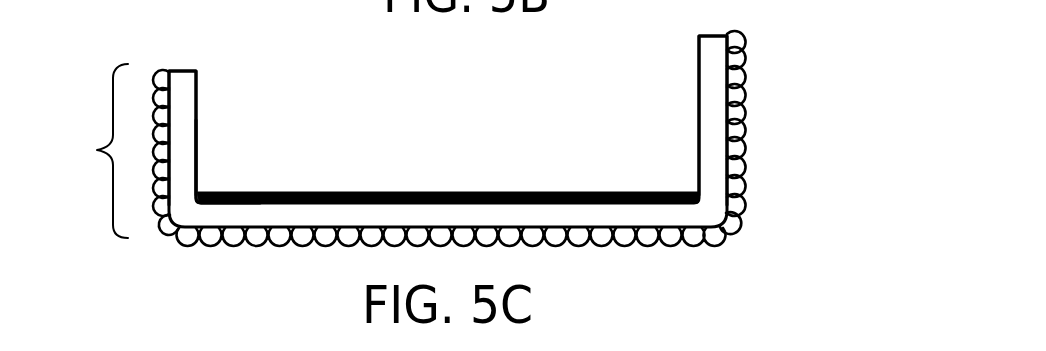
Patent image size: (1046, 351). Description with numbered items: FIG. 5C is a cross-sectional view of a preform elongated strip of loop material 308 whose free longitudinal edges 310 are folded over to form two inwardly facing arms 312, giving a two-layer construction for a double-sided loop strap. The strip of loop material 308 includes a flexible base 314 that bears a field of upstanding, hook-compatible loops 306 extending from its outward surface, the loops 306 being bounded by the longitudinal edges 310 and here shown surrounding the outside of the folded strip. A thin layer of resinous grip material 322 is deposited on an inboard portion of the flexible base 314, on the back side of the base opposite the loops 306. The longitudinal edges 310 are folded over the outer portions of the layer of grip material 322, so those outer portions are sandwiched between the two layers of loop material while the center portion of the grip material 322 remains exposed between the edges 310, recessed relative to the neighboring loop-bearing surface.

The loops 306 is at (747, 127).
The strip of loop material 308 is at (817, 91).
The longitudinal edges 310 is at (183, 68).
The inwardly facing arms 312 is at (80, 151).
The flexible base 314 is at (200, 143).
The resinous grip material 322 is at (433, 192).